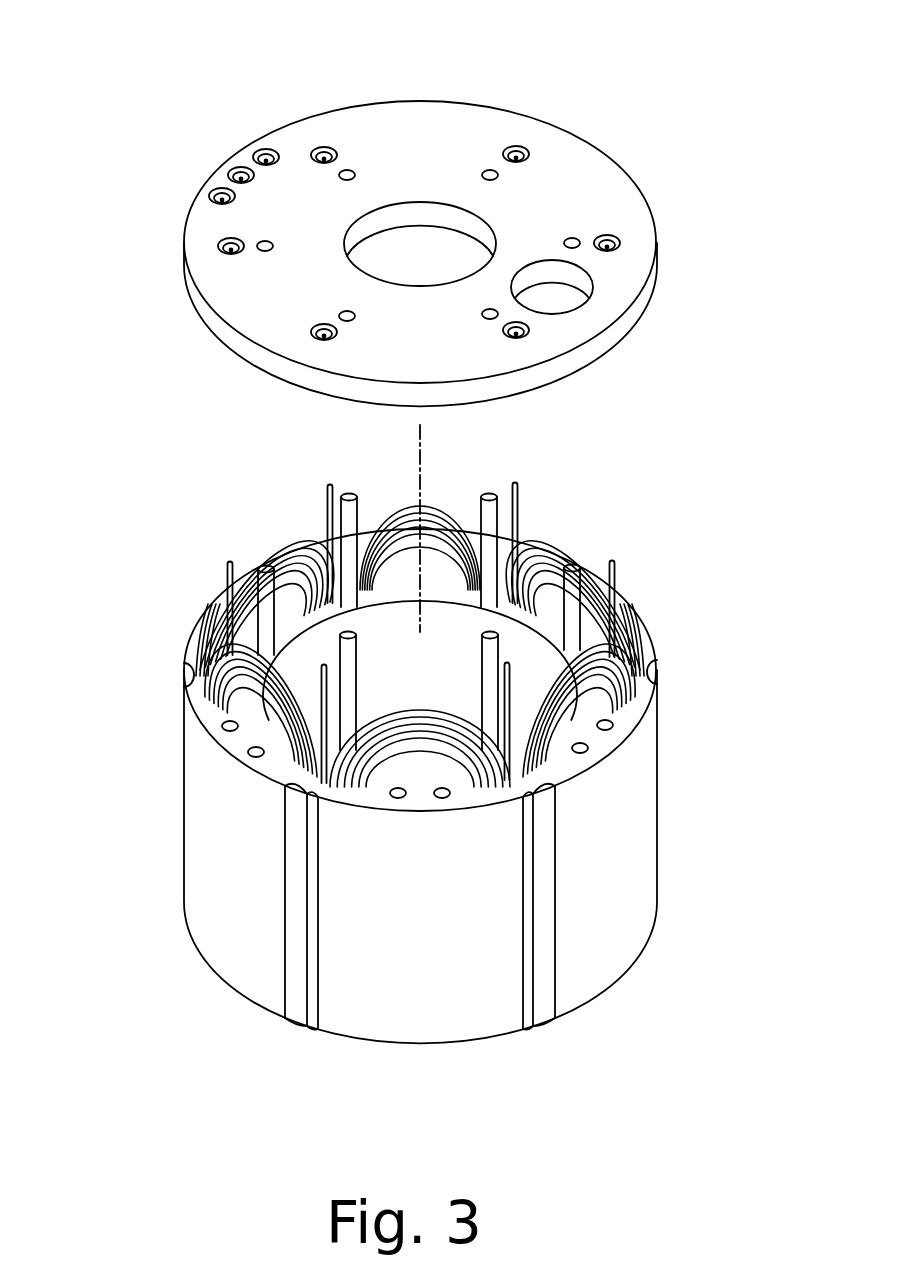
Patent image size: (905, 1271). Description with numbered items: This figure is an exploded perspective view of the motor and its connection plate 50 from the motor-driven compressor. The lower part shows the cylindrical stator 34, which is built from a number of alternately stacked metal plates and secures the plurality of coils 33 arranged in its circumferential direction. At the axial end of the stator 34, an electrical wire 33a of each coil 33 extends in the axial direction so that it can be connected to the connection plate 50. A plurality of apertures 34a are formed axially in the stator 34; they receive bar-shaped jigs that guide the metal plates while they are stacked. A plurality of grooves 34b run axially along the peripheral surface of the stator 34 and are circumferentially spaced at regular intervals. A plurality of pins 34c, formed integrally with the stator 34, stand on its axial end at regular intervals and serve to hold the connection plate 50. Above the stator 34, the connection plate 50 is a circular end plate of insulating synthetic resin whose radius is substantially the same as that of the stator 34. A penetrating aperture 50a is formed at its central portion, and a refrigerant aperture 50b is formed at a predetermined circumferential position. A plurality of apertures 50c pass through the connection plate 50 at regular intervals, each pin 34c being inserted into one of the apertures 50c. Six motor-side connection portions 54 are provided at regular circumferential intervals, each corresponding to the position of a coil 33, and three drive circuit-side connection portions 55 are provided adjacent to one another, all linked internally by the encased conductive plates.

The connection plate 50 is at (440, 92).
The penetrating aperture 50a is at (415, 246).
The refrigerant aperture 50b is at (563, 302).
The apertures 50c is at (349, 170).
The motor-side connection portions 54 is at (518, 146).
The drive circuit-side connection portions 55 is at (262, 148).
The coils 33 is at (272, 549).
The electrical wire 33a is at (520, 511).
The stator 34 is at (592, 967).
The apertures 34a is at (247, 746).
The grooves 34b is at (292, 988).
The pins 34c is at (343, 527).